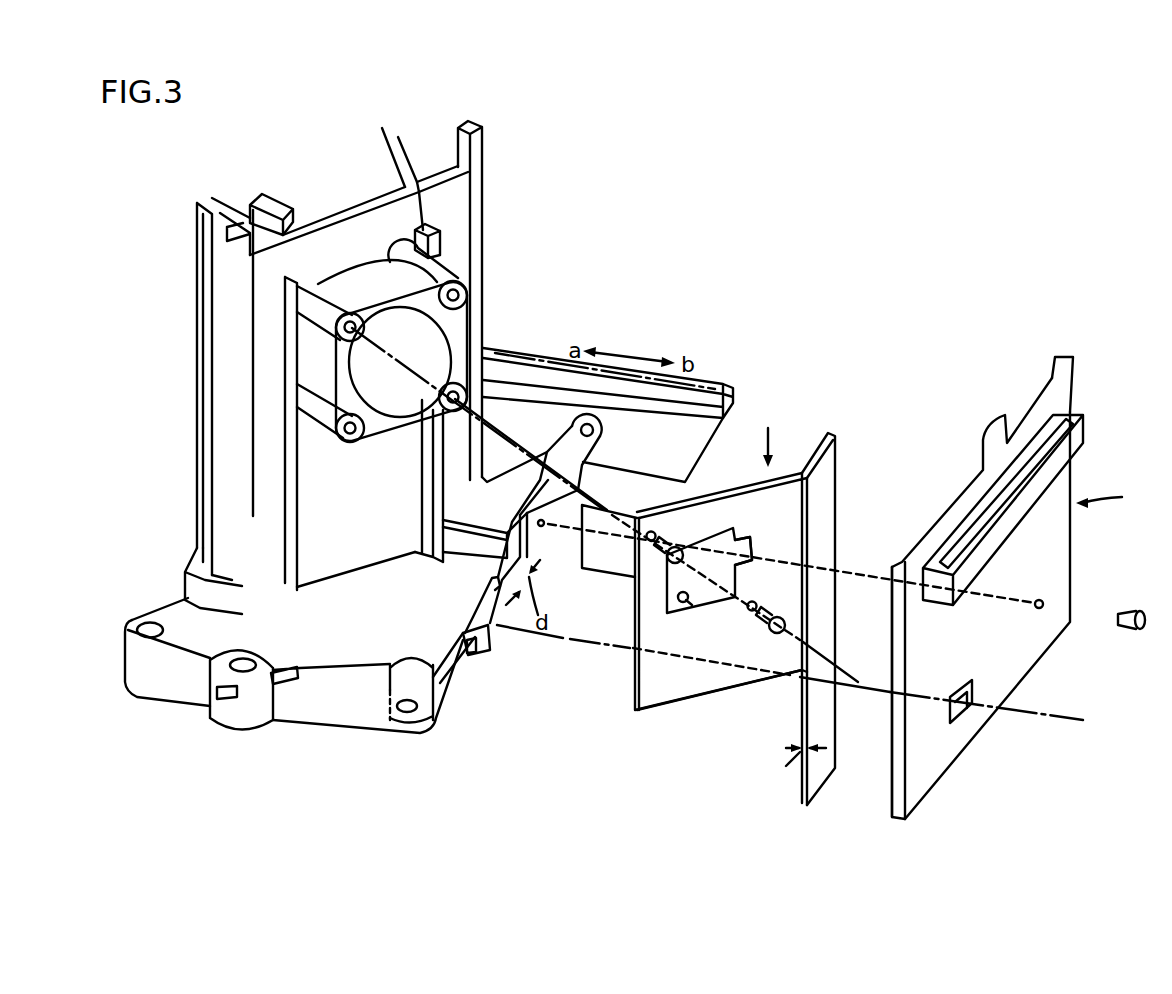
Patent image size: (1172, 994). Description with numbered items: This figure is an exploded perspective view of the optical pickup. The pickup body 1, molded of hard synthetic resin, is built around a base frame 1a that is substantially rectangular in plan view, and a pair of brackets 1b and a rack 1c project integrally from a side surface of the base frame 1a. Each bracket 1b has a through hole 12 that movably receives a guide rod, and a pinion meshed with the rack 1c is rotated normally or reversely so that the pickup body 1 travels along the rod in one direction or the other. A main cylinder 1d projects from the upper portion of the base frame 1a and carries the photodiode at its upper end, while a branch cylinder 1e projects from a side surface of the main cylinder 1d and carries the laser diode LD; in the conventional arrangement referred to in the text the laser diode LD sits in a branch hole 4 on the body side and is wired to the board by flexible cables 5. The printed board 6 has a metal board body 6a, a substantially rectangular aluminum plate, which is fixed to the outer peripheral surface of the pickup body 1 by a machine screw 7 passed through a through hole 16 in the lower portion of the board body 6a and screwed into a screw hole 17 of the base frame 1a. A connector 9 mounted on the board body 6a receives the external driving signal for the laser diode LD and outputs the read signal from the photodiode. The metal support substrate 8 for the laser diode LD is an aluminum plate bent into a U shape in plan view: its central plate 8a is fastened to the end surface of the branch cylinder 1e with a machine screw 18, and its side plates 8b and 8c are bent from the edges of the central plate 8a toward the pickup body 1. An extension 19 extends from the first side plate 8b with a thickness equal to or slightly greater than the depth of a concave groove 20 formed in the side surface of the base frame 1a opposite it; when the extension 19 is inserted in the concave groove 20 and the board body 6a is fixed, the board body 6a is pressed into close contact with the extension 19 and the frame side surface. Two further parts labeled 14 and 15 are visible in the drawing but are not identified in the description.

The pickup body 1 is at (190, 366).
The base frame 1a is at (337, 712).
The brackets 1b is at (565, 418).
The rack 1c is at (710, 378).
The main cylinder 1d is at (275, 266).
The branch cylinder 1e is at (340, 400).
The branch hole 4 is at (390, 335).
The flexible cables 5 is at (745, 547).
The printed board 6 is at (991, 598).
The metal board body 6a is at (895, 775).
The machine screw 7 is at (1130, 630).
The metal support substrate 8 is at (734, 603).
The central plate 8a is at (670, 690).
The first side plate 8b is at (822, 484).
The side plate 8c is at (605, 570).
The connector 9 is at (1085, 437).
The through holes 12 is at (596, 436).
The window opening 14 is at (962, 708).
The projection 15 is at (470, 658).
The through hole 16 is at (1043, 603).
The screw hole 17 is at (544, 526).
The machine screw 18 is at (670, 548).
The extension 19 is at (818, 698).
The concave groove 20 is at (527, 566).
The laser diode LD is at (685, 577).